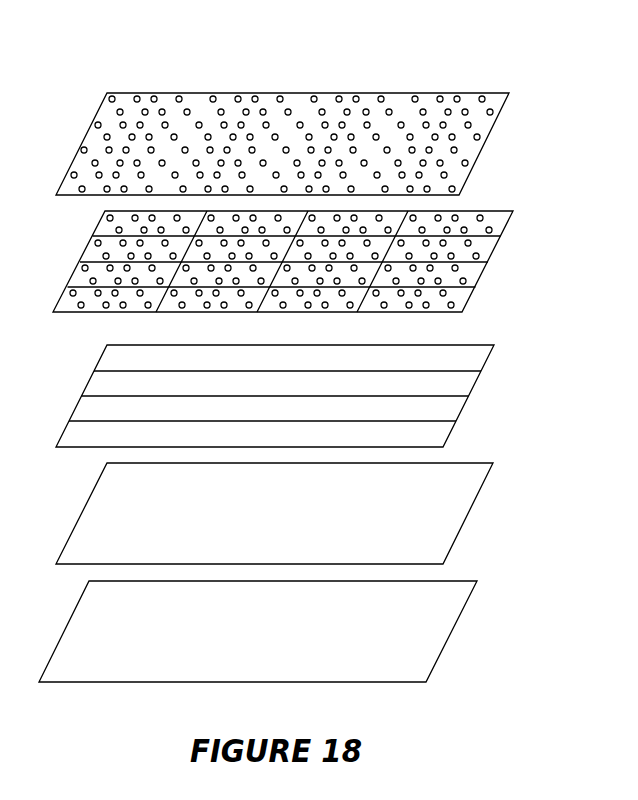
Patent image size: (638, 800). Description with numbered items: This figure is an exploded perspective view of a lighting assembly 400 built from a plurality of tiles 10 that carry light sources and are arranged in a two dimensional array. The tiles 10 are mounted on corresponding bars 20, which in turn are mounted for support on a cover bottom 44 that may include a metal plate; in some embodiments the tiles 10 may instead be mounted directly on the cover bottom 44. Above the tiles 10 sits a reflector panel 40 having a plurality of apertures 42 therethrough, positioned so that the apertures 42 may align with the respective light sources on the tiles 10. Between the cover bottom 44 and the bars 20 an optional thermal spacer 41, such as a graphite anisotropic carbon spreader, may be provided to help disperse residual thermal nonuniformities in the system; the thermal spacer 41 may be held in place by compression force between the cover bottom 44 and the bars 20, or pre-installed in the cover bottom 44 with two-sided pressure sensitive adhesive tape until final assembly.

The lighting assembly 400 is at (178, 62).
The reflector panel 40 is at (308, 109).
The apertures 42 is at (366, 109).
The tiles 10 is at (495, 248).
The bars 20 is at (475, 380).
The thermal spacer 41 is at (472, 512).
The cover bottom 44 is at (453, 632).